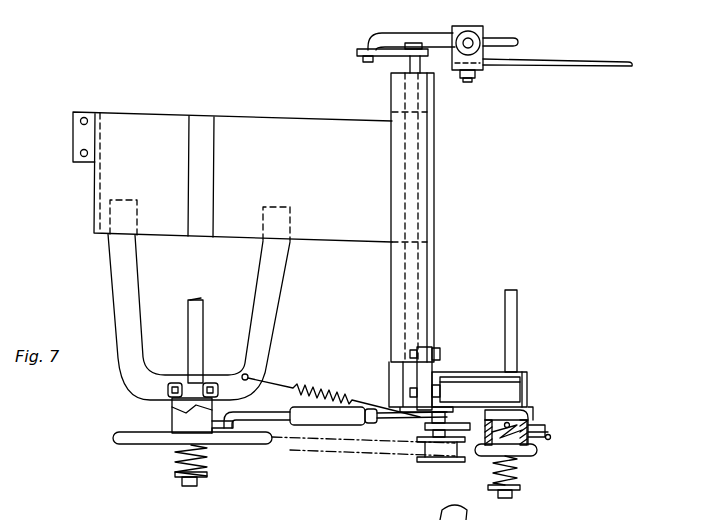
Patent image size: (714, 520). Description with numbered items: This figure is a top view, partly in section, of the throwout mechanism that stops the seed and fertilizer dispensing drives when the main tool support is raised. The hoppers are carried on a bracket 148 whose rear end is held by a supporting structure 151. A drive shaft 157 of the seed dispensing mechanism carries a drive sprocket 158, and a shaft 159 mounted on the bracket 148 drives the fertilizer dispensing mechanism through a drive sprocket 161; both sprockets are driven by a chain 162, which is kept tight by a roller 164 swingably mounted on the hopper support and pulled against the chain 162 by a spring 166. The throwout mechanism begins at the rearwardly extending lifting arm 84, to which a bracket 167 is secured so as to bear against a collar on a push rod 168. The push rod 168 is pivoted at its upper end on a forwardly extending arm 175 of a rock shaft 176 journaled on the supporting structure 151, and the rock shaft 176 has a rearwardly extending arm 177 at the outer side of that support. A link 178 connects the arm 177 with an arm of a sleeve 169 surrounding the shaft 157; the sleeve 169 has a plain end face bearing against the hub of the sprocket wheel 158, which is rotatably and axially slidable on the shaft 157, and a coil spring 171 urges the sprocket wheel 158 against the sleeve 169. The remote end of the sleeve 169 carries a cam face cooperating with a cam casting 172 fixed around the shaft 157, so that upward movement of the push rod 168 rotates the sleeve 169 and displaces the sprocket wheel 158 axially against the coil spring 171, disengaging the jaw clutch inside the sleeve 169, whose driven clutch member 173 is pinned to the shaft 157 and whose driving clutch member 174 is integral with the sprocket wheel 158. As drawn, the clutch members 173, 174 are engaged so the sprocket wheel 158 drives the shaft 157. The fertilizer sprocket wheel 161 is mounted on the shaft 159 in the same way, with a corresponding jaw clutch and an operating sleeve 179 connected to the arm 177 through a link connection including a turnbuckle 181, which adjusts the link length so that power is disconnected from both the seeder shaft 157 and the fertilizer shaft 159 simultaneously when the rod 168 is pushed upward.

The lifting arm 84 is at (558, 63).
The bracket 148 is at (326, 240).
The supporting structure 151 is at (435, 258).
The drive shaft 157 is at (517, 340).
The drive sprocket 158 is at (527, 456).
The shaft 159 is at (201, 346).
The drive sprocket 161 is at (151, 441).
The chain 162 is at (346, 447).
The roller 164 is at (433, 460).
The spring 166 is at (328, 386).
The bracket 167 is at (481, 69).
The push rod 168 is at (371, 38).
The sleeve 169 is at (542, 443).
The coil spring 171 is at (497, 476).
The cam casting 172 is at (530, 413).
The driven clutch member 173 is at (547, 433).
The driving clutch member 174 is at (487, 456).
The forwardly extending arm 175 is at (360, 53).
The rock shaft 176 is at (404, 375).
The rearwardly extending arm 177 is at (394, 405).
The link 178 is at (536, 425).
The operating sleeve 179 is at (172, 417).
The turnbuckle 181 is at (300, 409).